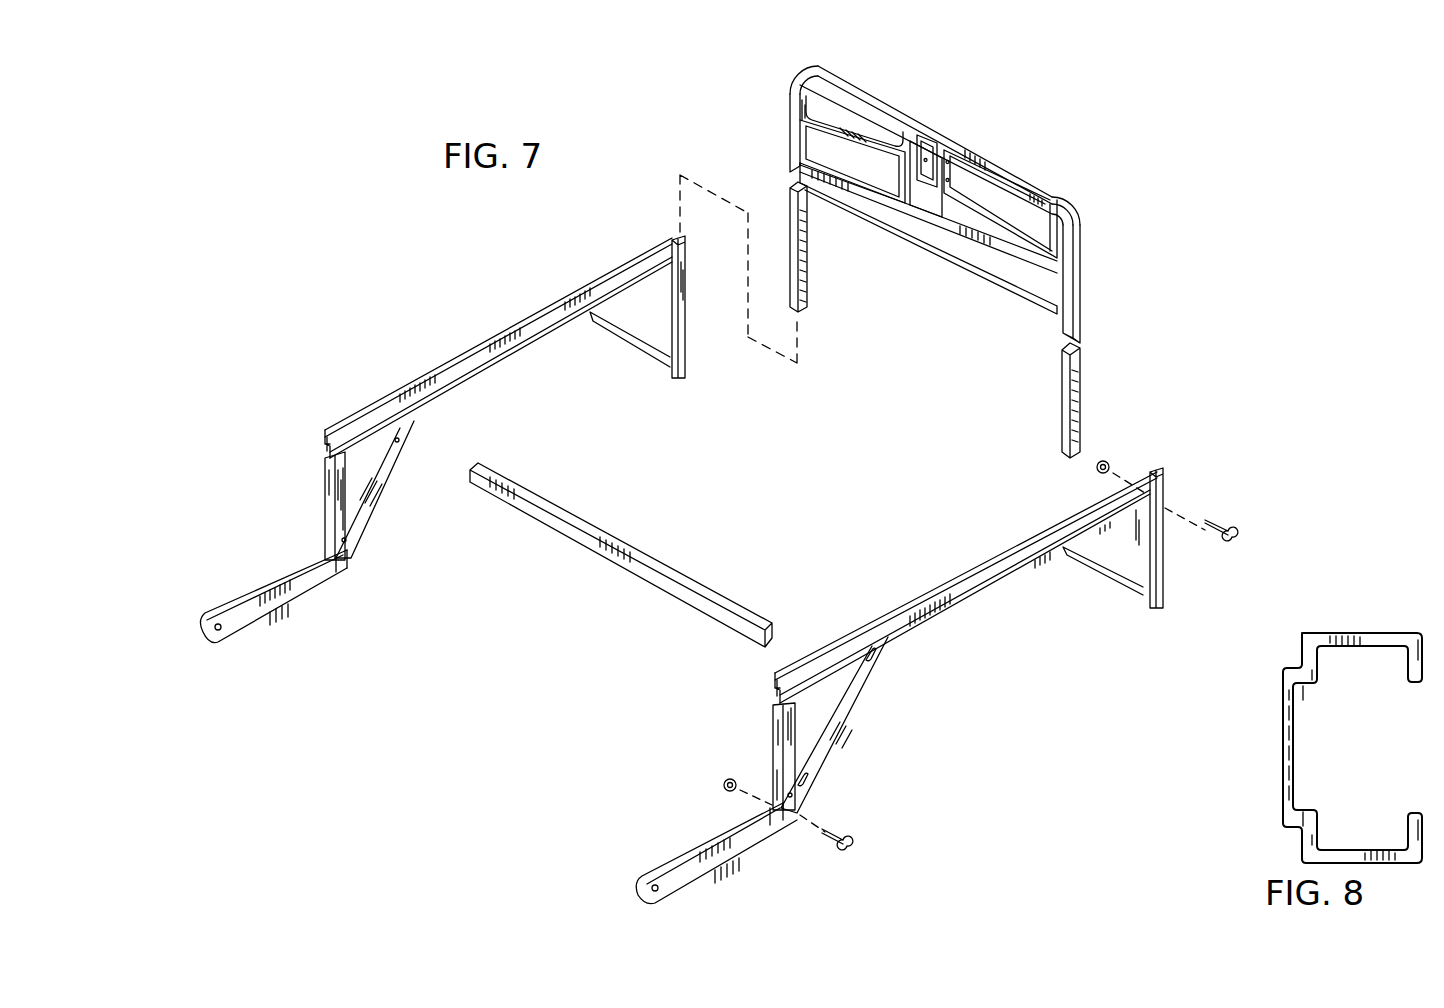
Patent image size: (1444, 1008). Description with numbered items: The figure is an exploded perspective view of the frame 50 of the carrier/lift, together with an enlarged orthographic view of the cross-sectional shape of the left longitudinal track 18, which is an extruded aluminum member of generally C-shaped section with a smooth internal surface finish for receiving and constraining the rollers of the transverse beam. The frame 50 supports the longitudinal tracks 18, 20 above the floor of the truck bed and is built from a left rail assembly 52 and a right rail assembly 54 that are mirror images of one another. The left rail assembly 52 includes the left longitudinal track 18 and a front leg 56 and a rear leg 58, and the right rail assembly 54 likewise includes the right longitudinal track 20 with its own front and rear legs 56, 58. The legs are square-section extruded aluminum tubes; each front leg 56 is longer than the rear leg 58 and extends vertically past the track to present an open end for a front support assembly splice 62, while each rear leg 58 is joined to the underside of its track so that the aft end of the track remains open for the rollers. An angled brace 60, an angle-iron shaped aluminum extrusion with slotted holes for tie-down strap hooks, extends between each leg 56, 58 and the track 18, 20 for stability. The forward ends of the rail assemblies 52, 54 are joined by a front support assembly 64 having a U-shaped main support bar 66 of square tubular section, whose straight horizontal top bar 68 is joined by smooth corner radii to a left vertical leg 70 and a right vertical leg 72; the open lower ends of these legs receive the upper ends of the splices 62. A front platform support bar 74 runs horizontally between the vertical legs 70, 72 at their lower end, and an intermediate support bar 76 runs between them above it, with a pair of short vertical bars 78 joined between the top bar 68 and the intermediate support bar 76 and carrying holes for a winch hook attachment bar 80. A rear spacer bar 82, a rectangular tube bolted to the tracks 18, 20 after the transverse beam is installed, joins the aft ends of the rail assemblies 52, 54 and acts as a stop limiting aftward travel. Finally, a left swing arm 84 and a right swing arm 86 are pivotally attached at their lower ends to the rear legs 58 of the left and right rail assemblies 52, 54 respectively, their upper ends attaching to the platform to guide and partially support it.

In FIG. 7, the left longitudinal track 18 is at (467, 349).
In FIG. 8, the left longitudinal track 18 is at (1300, 655).
In FIG. 7, the right longitudinal track 20 is at (917, 625).
In FIG. 7, the frame 50 is at (607, 211).
In FIG. 7, the left rail assembly 52 is at (540, 310).
In FIG. 7, the right rail assembly 54 is at (990, 583).
In FIG. 7, the front leg 56 is at (688, 325).
In FIG. 7, the rear leg 58 is at (320, 517).
In FIG. 7, the angled brace 60 is at (630, 343).
In FIG. 7, the front support assembly splice 62 is at (808, 262).
In FIG. 7, the front support assembly 64 is at (1080, 242).
In FIG. 7, the U-shaped main support bar 66 is at (967, 140).
In FIG. 7, the top bar 68 is at (1020, 163).
In FIG. 7, the left vertical leg 70 is at (790, 130).
In FIG. 7, the right vertical leg 72 is at (1078, 298).
In FIG. 7, the front platform support bar 74 is at (1000, 283).
In FIG. 7, the intermediate support bar 76 is at (957, 207).
In FIG. 7, the short vertical bar 78 is at (888, 136).
In FIG. 7, the winch hook attachment bar 80 is at (927, 182).
In FIG. 7, the rear spacer bar 82 is at (595, 532).
In FIG. 7, the left swing arm 84 is at (290, 603).
In FIG. 7, the right swing arm 86 is at (750, 843).